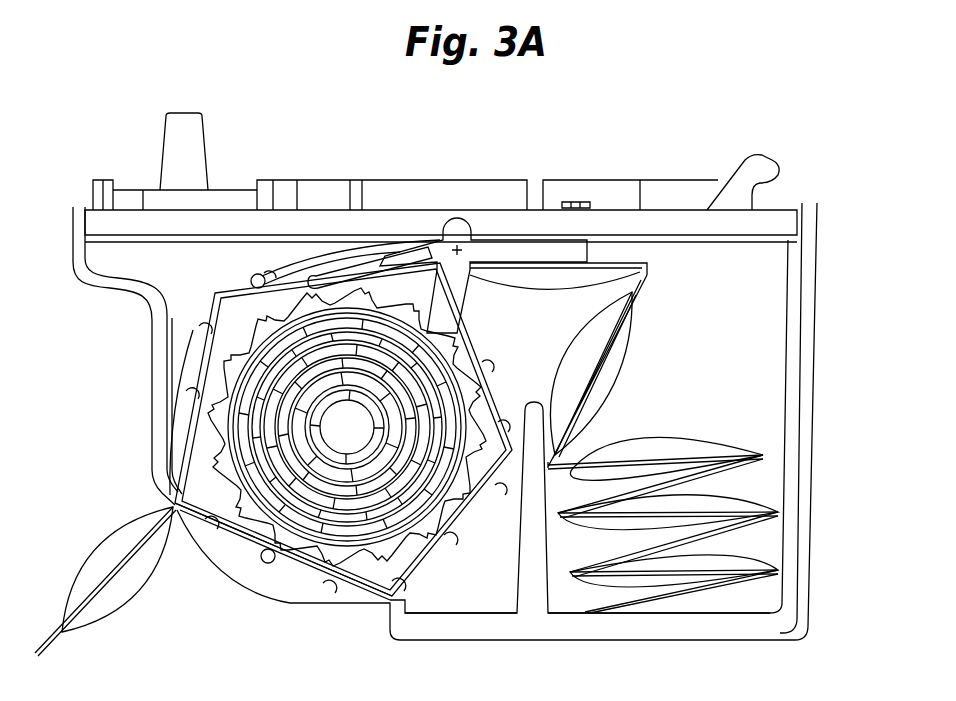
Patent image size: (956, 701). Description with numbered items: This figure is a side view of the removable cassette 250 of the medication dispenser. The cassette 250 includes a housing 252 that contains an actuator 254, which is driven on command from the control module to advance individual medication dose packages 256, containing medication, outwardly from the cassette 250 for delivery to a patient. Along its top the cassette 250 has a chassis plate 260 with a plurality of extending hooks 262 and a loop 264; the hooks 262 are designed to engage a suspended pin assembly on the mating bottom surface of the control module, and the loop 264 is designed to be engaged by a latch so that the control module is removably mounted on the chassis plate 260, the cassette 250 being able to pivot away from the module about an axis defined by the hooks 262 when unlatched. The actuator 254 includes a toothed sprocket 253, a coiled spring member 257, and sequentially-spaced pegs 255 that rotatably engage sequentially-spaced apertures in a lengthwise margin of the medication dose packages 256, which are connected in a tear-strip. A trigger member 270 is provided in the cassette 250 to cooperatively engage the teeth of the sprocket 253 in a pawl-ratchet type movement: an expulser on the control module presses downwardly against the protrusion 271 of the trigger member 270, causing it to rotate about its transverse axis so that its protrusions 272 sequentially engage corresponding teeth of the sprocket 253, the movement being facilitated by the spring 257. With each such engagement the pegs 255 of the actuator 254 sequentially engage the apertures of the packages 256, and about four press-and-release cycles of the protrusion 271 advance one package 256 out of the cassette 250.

The cassette 250 is at (825, 176).
The housing 252 is at (497, 630).
The toothed sprocket 253 is at (210, 344).
The actuator 254 is at (295, 573).
The pegs 255 is at (262, 563).
The medication dose packages 256 is at (83, 625).
The coiled spring member 257 is at (238, 410).
The chassis plate 260 is at (403, 139).
The hooks 262 is at (755, 154).
The loop 264 is at (203, 112).
The trigger member 270 is at (467, 215).
The protrusion 271 is at (578, 200).
The protrusions 272 is at (403, 277).